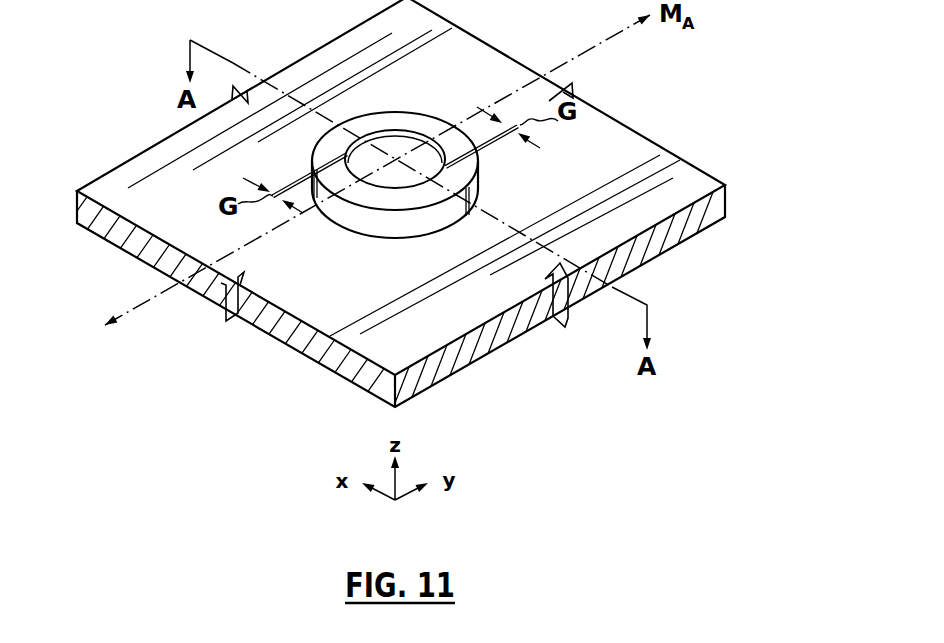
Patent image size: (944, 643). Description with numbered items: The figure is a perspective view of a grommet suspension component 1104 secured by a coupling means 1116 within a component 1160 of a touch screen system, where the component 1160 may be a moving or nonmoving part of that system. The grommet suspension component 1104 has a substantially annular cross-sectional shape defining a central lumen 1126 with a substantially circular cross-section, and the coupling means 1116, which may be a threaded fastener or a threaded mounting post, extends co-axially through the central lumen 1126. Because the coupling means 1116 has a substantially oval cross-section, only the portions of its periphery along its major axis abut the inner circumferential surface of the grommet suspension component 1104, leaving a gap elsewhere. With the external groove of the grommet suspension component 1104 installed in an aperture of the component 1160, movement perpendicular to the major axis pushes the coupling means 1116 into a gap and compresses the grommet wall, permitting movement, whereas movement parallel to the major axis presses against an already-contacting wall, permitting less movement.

The component of touch screen system 1160 is at (688, 186).
The coupling means 1116 is at (408, 140).
The central lumen 1126 is at (408, 172).
The grommet suspension component 1104 is at (497, 177).